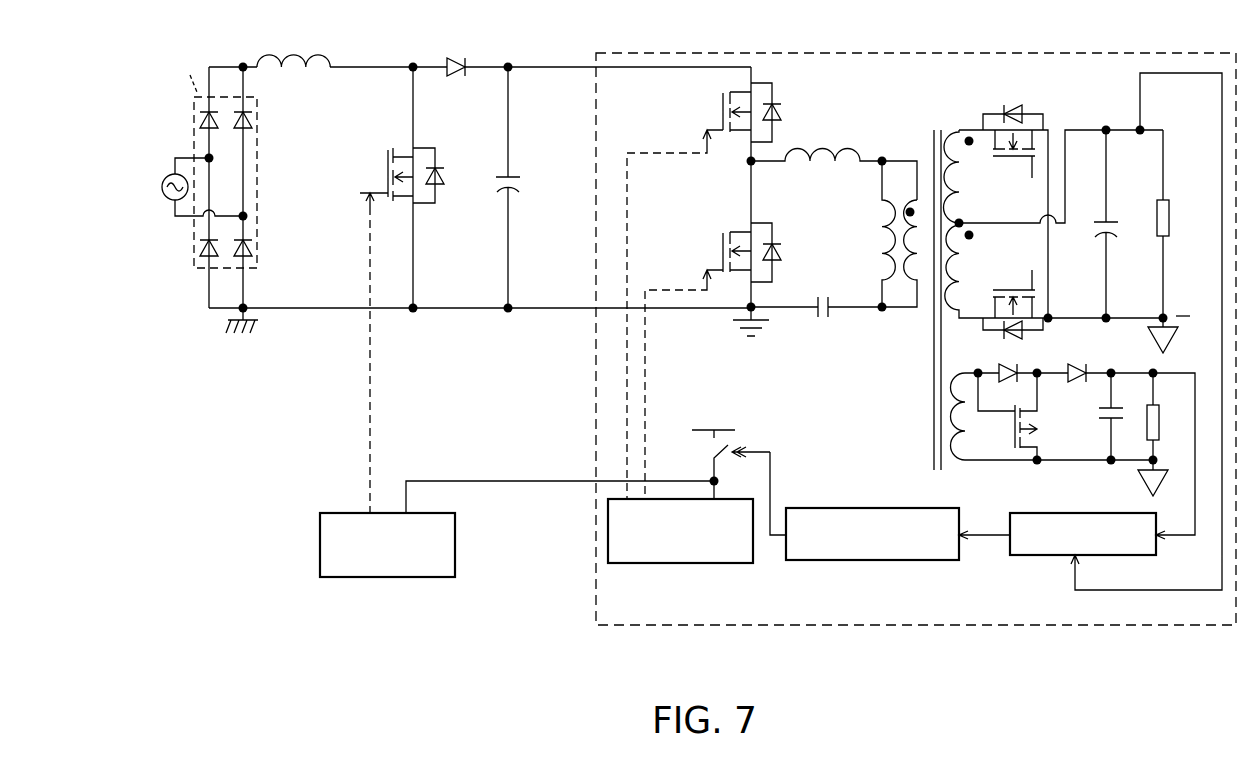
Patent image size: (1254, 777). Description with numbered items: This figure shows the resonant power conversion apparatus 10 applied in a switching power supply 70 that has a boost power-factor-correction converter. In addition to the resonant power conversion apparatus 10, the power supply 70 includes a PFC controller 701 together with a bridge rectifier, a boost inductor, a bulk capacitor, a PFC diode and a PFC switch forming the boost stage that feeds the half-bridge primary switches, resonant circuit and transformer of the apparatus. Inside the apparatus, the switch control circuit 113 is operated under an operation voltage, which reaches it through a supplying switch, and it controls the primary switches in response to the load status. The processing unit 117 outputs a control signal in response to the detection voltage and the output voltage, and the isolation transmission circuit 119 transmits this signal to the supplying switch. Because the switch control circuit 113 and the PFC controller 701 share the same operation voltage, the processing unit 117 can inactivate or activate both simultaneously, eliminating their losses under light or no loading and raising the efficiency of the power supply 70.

The power supply 70 is at (218, 713).
The PFC controller 701 is at (418, 578).
The resonant power conversion apparatus 10 is at (1073, 626).
The switch control circuit 113 is at (710, 564).
The isolation transmission circuit 119 is at (908, 561).
The processing unit 117 is at (1157, 547).